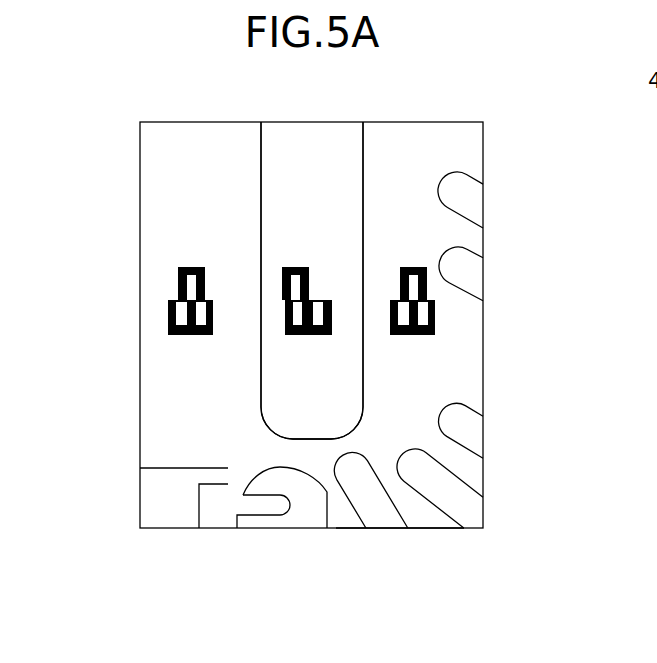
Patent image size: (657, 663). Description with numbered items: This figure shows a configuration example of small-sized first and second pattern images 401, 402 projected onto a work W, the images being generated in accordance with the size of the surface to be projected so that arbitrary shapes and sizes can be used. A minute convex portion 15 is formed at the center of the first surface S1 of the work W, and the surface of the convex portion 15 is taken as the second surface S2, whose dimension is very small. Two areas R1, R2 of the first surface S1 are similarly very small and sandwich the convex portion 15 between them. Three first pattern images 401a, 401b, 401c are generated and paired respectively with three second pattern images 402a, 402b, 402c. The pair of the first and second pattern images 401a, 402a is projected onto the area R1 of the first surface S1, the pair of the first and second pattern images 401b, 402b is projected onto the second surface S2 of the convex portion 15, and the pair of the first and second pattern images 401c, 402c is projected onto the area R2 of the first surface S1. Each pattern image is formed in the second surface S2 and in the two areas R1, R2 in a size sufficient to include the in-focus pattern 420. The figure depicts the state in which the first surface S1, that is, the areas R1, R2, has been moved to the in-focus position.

The convex portion 15 is at (297, 137).
The first pattern image 401 is at (517, 282).
The first pattern image 401a is at (427, 284).
The first pattern image 401b is at (295, 267).
The first pattern image 401c is at (178, 280).
The second pattern image 402 is at (512, 325).
The second pattern image 402a is at (435, 315).
The second pattern image 402b is at (300, 335).
The second pattern image 402c is at (168, 325).
The in-focus pattern 420 is at (168, 306).
The area R1 is at (455, 135).
The area R2 is at (153, 220).
The first surface S1 is at (344, 526).
The second surface S2 is at (343, 130).
The work W is at (437, 526).